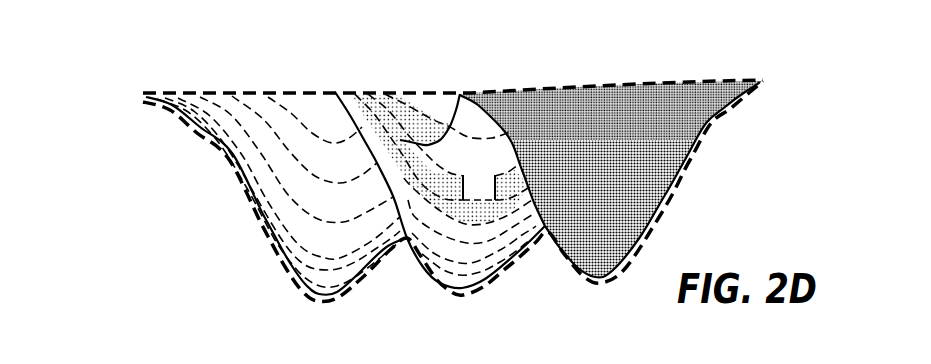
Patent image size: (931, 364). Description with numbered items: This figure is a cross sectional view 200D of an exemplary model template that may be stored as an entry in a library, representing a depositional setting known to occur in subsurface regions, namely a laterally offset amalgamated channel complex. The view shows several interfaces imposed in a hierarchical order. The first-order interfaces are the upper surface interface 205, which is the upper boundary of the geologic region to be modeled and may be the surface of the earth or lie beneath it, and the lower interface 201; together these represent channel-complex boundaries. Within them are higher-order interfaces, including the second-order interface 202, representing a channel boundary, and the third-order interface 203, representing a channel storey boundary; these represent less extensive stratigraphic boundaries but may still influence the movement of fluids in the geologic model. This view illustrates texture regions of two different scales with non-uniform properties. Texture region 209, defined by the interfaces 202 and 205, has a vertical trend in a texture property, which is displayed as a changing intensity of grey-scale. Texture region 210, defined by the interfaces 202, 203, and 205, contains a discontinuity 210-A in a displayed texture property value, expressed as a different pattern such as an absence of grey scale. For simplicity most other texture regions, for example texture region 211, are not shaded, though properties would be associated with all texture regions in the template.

The cross sectional view 200D is at (153, 36).
The lower interface 201 is at (268, 238).
The second-order interface 202 is at (687, 157).
The third-order interface 203 is at (460, 94).
The upper surface interface 205 is at (210, 92).
The texture region 209 is at (617, 195).
The texture region 210 is at (367, 107).
The discontinuity 210-A is at (477, 197).
The texture region 211 is at (278, 137).